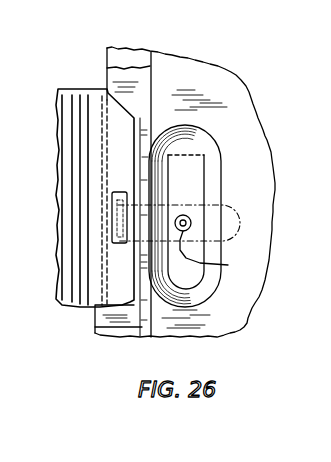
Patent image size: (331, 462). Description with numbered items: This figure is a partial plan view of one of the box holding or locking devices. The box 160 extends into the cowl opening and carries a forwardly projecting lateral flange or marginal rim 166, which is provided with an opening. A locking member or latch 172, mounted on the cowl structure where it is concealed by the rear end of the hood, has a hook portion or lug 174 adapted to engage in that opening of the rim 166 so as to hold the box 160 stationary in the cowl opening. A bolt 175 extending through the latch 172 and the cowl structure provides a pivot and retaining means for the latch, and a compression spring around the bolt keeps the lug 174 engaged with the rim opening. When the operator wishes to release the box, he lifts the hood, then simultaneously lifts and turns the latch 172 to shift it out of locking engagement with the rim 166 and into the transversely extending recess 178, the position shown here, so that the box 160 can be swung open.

The box 160 is at (68, 91).
The lateral flange or marginal rim 166 is at (124, 120).
The locking member or latch 172 is at (195, 194).
The hook portion or lug 174 is at (199, 152).
The bolt 175 is at (218, 245).
The transversely extending recess 178 is at (212, 167).